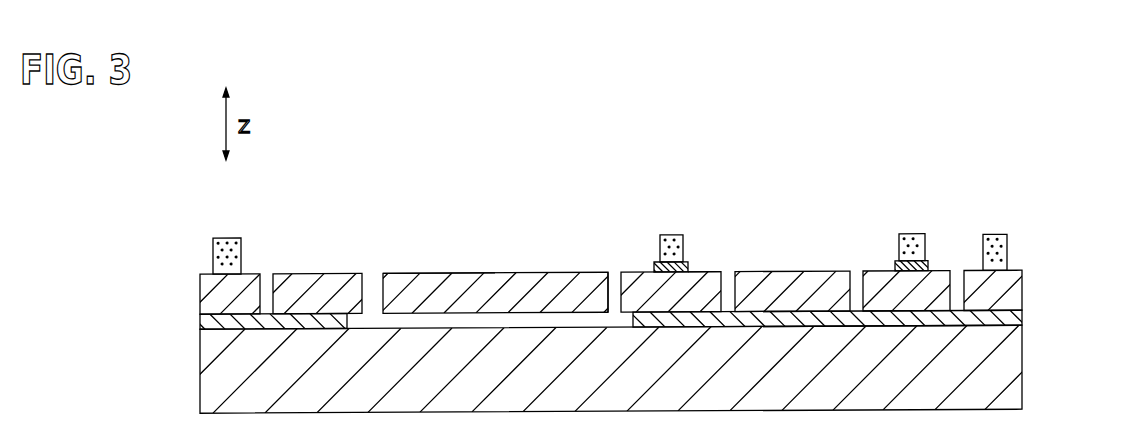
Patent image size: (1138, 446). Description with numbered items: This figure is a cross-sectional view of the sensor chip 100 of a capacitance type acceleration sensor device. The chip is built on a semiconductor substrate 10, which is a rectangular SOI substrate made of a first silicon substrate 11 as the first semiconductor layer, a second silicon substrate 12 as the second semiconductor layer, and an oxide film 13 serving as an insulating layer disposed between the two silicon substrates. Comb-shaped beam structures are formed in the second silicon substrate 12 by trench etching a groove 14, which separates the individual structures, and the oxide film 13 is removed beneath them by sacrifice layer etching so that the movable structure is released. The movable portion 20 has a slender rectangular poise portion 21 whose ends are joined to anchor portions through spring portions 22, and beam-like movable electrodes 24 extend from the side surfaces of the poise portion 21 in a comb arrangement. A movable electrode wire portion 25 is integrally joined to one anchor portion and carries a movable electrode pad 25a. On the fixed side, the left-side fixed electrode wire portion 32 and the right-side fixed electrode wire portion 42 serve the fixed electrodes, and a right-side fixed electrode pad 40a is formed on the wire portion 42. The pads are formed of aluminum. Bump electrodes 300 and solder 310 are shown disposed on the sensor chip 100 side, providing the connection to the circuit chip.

The sensor chip 100 is at (1005, 199).
The semiconductor substrate 10 is at (1077, 294).
The first silicon substrate 11 is at (1016, 351).
The second silicon substrate 12 is at (1016, 306).
The oxide film 13 is at (1016, 323).
The groove 14 is at (372, 281).
The movable portion 20 is at (560, 274).
The poise portion 21 is at (510, 274).
The spring portion 22 is at (608, 274).
The movable electrode 24 is at (430, 274).
The movable electrode wire portion 25 is at (706, 274).
The movable electrode pad 25a is at (693, 274).
The left-side fixed electrode wire portion 32 is at (310, 274).
The right-side fixed electrode pad 40a is at (893, 263).
The right-side fixed electrode wire portion 42 is at (940, 272).
The bump electrode 300 is at (672, 237).
The solder 310 is at (230, 238).